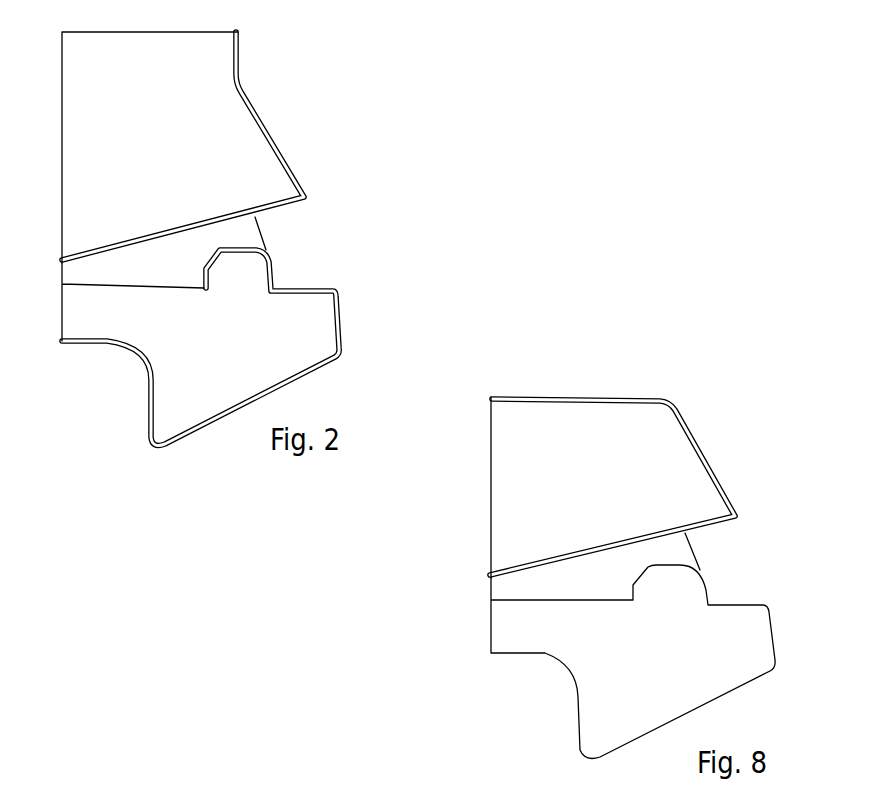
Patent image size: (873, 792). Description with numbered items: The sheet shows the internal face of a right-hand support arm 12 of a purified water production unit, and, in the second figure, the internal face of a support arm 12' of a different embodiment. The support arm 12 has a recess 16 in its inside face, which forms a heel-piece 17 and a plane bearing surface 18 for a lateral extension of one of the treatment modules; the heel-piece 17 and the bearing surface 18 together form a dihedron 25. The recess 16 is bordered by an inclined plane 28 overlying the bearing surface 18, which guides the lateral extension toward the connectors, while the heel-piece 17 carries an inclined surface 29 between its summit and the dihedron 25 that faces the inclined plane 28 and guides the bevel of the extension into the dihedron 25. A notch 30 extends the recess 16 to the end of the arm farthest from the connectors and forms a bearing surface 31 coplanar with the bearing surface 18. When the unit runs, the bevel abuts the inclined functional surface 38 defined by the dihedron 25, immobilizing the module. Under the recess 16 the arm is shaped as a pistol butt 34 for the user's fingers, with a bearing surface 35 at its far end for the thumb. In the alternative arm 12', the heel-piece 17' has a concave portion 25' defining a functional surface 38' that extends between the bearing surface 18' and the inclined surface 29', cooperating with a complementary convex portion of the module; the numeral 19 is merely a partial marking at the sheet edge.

In FIG. 2, the support arm 12 is at (235, 147).
In FIG. 2, the recess 16 is at (98, 265).
In FIG. 8, the recess 16 is at (633, 661).
In FIG. 2, the heel-piece 17 is at (305, 211).
In FIG. 2, the bearing surface 18 is at (97, 334).
In FIG. 2, the dihedron 25 is at (164, 220).
In FIG. 2, the inclined plane 28 is at (114, 257).
In FIG. 2, the inclined surface 29 is at (191, 204).
In FIG. 2, the notch 30 is at (291, 265).
In FIG. 2, the bearing surface 31 is at (328, 283).
In FIG. 2, the bearing surface 35 is at (344, 320).
In FIG. 2, the inclined functional surface 38 is at (181, 321).
In FIG. 2, the pistol butt 34 is at (152, 453).
In FIG. 8, the support arm 12' is at (612, 439).
In FIG. 8, the heel-piece 17' is at (736, 544).
In FIG. 8, the bearing surface 18' is at (474, 592).
In FIG. 8, the concave portion 25' is at (573, 541).
In FIG. 8, the inclined surface 29' is at (619, 521).
In FIG. 8, the functional surface 38' is at (618, 643).
In FIG. 8, the reference numeral 19 is at (443, 782).